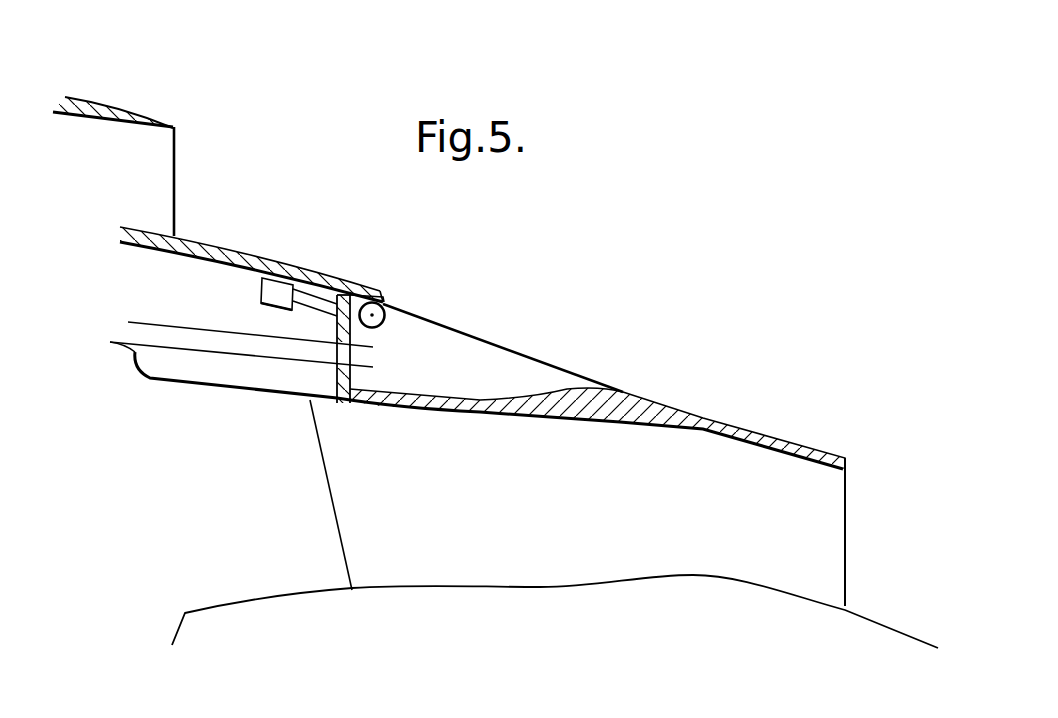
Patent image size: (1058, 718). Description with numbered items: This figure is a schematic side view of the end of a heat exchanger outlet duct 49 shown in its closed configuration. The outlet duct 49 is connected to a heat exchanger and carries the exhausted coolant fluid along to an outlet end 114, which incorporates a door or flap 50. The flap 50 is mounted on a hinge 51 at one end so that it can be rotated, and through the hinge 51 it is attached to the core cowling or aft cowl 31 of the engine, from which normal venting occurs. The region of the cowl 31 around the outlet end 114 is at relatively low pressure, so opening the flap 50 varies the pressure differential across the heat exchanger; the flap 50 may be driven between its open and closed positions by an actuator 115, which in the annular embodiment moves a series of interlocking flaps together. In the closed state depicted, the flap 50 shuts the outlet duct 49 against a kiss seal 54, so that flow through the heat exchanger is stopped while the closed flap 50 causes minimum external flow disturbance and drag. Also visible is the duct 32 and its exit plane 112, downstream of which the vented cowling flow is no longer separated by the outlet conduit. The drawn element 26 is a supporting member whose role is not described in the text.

The duct 32 is at (128, 181).
The exit plane 112 is at (175, 148).
The core cowling 31 is at (239, 256).
The actuator 115 is at (262, 290).
The support strut 26 is at (341, 407).
The hinge 51 is at (384, 300).
The flap 50 is at (478, 338).
The outlet end 114 is at (597, 347).
The kiss seal 54 is at (646, 387).
The outlet duct 49 is at (136, 353).